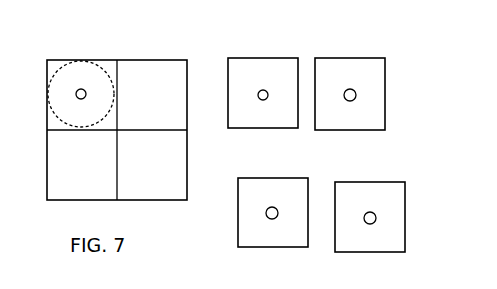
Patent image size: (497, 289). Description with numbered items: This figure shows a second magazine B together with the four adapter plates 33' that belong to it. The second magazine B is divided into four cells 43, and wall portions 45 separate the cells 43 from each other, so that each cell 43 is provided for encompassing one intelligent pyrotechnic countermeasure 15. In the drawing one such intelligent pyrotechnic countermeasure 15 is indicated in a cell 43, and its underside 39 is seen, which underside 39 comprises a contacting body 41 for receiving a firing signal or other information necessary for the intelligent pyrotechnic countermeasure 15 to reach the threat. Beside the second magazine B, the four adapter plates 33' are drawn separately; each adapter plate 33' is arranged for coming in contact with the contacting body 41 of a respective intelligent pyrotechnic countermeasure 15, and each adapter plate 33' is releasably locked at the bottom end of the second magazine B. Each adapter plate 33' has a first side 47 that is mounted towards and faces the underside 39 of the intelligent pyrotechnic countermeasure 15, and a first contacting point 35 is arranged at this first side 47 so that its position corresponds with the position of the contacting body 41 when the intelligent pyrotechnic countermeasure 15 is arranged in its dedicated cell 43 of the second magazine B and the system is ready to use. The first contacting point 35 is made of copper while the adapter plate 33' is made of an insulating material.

The intelligent pyrotechnic countermeasure 15 is at (64, 63).
The underside 39 is at (93, 85).
The contacting body 41 is at (82, 99).
The cell 43 is at (162, 78).
The wall portions 45 is at (118, 104).
The second magazine B is at (147, 56).
The adapter plate 33' is at (316, 138).
The first contacting point 35 is at (267, 91).
The first side 47 is at (390, 195).